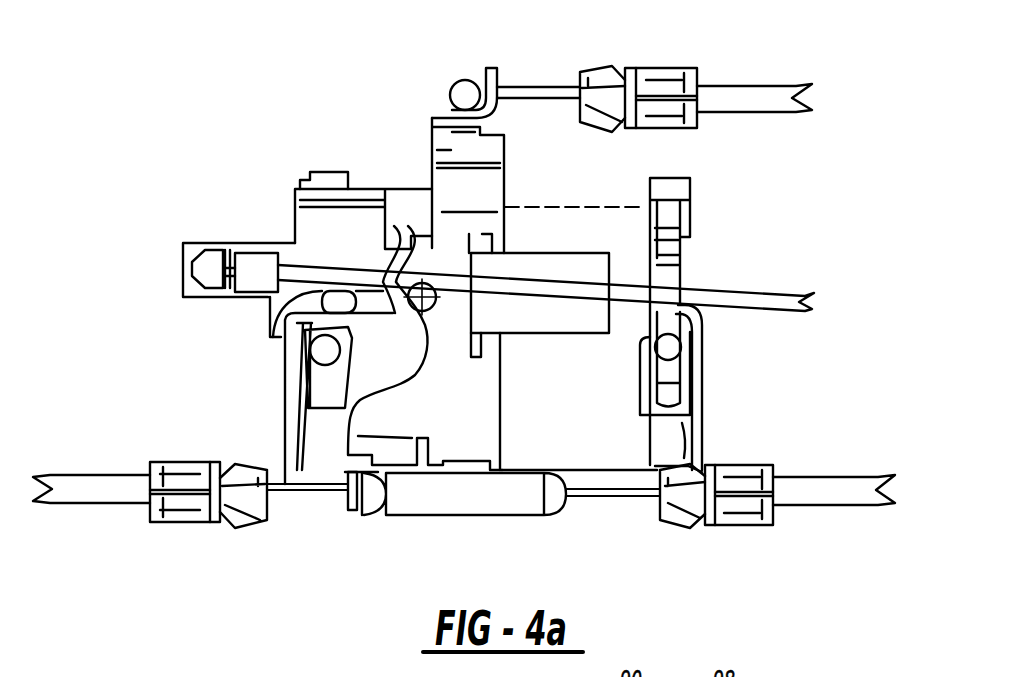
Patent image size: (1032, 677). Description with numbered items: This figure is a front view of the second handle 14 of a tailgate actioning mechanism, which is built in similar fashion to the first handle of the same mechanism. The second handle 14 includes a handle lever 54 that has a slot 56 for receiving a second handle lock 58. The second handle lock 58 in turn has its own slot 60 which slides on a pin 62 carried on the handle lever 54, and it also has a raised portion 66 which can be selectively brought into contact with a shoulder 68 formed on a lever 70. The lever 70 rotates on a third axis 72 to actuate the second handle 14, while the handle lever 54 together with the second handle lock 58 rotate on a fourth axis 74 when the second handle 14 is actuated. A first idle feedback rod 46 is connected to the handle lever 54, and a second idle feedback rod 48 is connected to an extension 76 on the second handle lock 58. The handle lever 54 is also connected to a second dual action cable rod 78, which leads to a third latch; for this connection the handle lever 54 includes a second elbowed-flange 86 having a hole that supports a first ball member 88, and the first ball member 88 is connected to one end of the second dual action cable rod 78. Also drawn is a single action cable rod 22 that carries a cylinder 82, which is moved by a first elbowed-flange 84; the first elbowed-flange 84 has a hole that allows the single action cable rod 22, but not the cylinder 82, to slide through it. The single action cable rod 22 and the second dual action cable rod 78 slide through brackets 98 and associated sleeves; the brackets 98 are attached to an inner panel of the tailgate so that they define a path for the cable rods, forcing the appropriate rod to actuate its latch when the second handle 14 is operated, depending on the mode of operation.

The second handle 14 is at (238, 78).
The single action cable rod 22 is at (285, 495).
The first idle feedback rod 46 is at (597, 472).
The second idle feedback rod 48 is at (698, 296).
The handle lever 54 is at (427, 152).
The slot 56 is at (467, 349).
The second handle lock 58 is at (585, 262).
The slot 60 is at (278, 334).
The pin 62 is at (436, 302).
The raised portion 66 is at (296, 222).
The shoulder 68 is at (335, 176).
The lever 70 is at (700, 398).
The third axis 72 is at (631, 207).
The fourth axis 74 is at (420, 246).
The extension 76 is at (190, 258).
The second dual action cable rod 78 is at (519, 87).
The cylinder 82 is at (412, 502).
The first elbowed-flange 84 is at (356, 512).
The second elbowed-flange 86 is at (428, 114).
The first ball member 88 is at (452, 95).
The brackets 98 is at (673, 80).